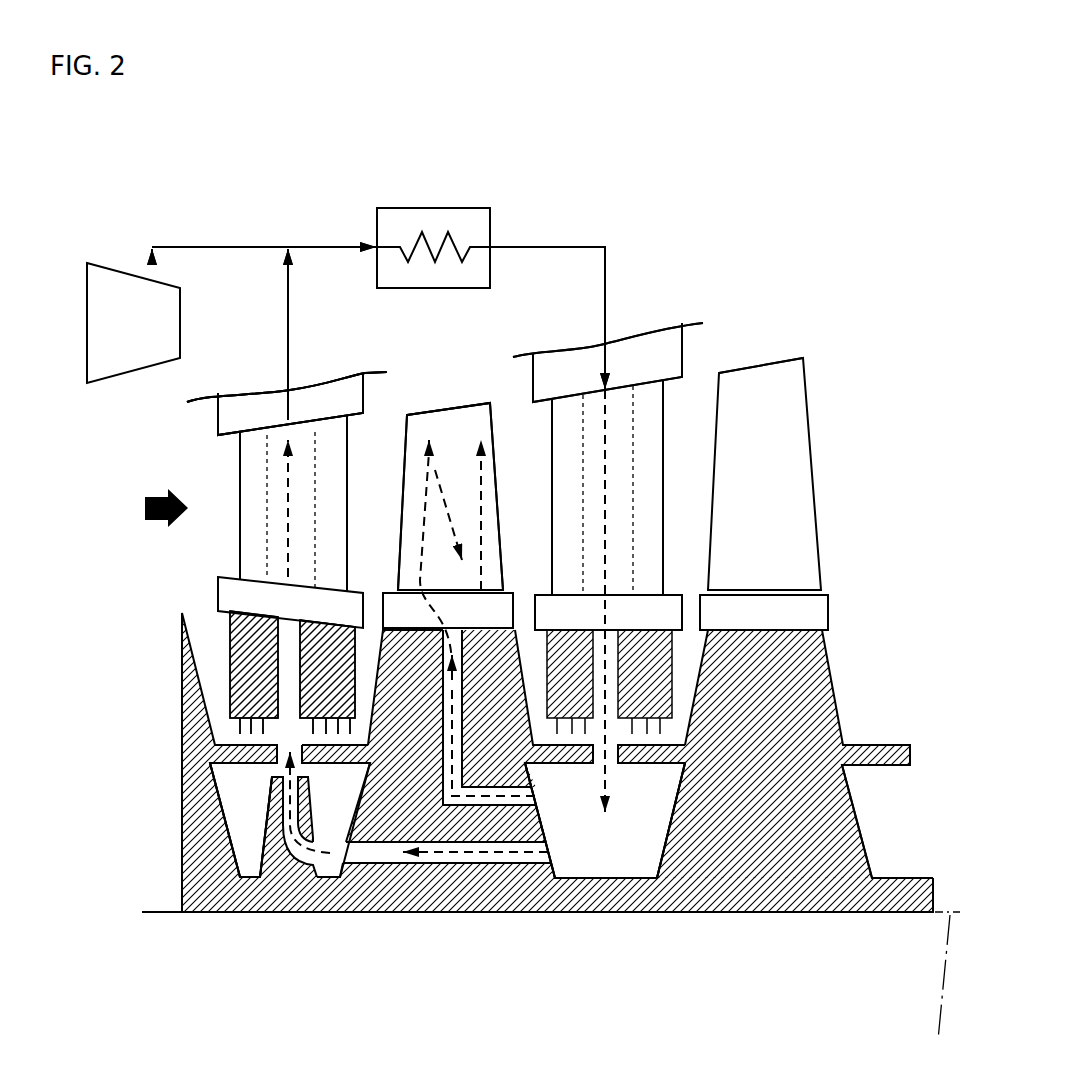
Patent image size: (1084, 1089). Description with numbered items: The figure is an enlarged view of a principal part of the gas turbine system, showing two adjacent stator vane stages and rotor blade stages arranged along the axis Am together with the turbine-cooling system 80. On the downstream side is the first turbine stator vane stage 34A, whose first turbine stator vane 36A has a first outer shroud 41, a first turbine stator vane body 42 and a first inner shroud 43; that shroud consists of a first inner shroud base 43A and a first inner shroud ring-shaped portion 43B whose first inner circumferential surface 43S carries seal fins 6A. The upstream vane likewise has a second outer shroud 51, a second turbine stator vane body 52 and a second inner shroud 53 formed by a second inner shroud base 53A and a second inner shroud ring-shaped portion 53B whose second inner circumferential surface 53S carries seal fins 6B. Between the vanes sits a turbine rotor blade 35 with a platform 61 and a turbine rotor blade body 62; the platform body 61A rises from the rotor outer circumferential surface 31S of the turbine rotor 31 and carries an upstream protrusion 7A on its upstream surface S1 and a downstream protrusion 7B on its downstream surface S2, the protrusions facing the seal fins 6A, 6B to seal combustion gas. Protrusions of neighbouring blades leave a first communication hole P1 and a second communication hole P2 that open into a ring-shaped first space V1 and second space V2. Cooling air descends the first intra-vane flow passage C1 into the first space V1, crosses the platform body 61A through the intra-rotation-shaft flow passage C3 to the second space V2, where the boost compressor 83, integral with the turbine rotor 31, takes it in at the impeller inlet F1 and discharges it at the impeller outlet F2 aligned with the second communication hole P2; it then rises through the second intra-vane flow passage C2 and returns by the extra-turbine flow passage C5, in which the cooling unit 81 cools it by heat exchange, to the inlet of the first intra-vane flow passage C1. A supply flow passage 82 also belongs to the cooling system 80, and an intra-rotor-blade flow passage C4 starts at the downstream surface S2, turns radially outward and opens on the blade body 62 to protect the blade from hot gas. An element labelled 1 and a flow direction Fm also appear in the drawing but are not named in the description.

The compressor 1 is at (87, 263).
The turbine-cooling system 80 is at (286, 195).
The cooling unit 81 is at (435, 208).
The supply flow passage 82 is at (207, 245).
The boost compressor 83 is at (273, 862).
The turbine rotor 31 is at (898, 913).
The rotor outer circumferential surface 31S is at (886, 880).
The first turbine stator vane stage 34A is at (156, 448).
The first turbine stator vane 36A is at (213, 421).
The turbine rotor blade 35 is at (438, 393).
The first outer shroud 41 is at (638, 343).
The first turbine stator vane body 42 is at (656, 398).
The first inner shroud 43 is at (722, 630).
The first inner shroud base 43A is at (715, 583).
The first inner shroud ring-shaped portion 43B is at (700, 690).
The first inner circumferential surface 43S is at (662, 720).
The second outer shroud 51 is at (243, 410).
The second turbine stator vane body 52 is at (253, 560).
The second inner shroud 53 is at (203, 595).
The second inner shroud base 53A is at (238, 606).
The second inner shroud ring-shaped portion 53B is at (250, 665).
The second inner circumferential surface 53S is at (260, 728).
The platform 61 is at (488, 722).
The platform body 61A is at (528, 705).
The turbine rotor blade body 62 is at (476, 430).
The seal fins 6A is at (677, 753).
The seal fins 6B is at (228, 757).
The upstream protrusion 7A is at (327, 850).
The downstream protrusion 7B is at (228, 850).
The first intra-vane flow passage C1 is at (620, 475).
The second intra-vane flow passage C2 is at (250, 470).
The intra-rotation-shaft flow passage C3 is at (452, 862).
The intra-rotor-blade flow passage C4 is at (470, 800).
The extra-turbine flow passage C5 is at (523, 245).
The impeller inlet F1 is at (292, 822).
The impeller outlet F2 is at (265, 870).
The upstream surface S1 is at (358, 842).
The downstream surface S2 is at (245, 731).
The first communication hole P1 is at (643, 792).
The second communication hole P2 is at (235, 865).
The first space V1 is at (670, 777).
The second space V2 is at (248, 835).
The main flow direction Fm is at (166, 522).
The axis Am is at (936, 992).